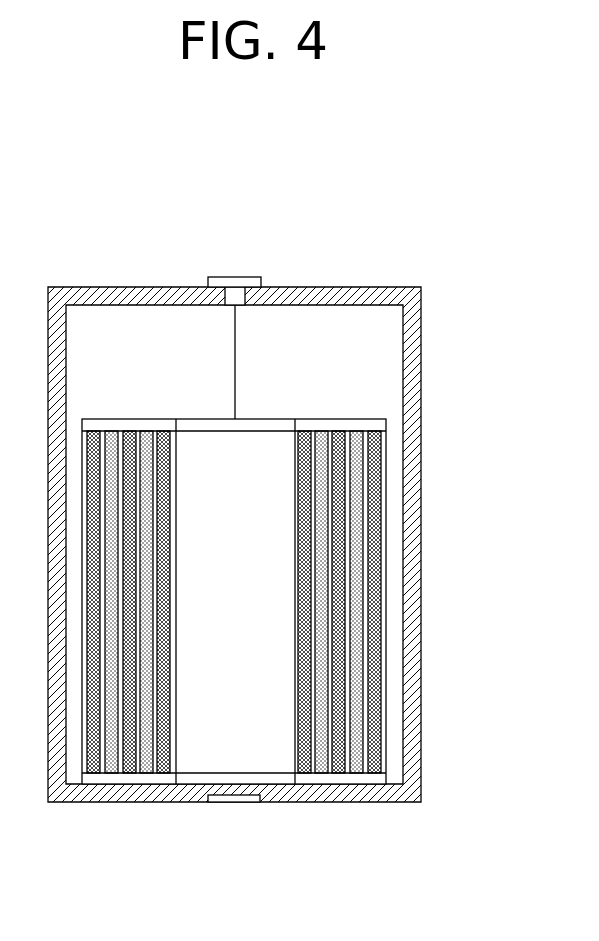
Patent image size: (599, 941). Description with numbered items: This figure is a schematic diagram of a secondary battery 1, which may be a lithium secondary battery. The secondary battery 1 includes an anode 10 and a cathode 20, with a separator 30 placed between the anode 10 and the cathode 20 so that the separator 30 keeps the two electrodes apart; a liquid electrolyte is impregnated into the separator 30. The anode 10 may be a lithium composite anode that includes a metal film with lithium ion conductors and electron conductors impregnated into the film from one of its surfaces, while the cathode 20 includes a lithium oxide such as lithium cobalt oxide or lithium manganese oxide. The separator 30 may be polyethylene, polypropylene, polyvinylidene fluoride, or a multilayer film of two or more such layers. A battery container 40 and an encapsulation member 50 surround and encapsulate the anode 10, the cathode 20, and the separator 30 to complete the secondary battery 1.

The secondary battery 1 is at (401, 206).
The anode 10 is at (377, 515).
The cathode 20 is at (358, 557).
The separator 30 is at (385, 472).
The battery container 40 is at (413, 431).
The encapsulation member 50 is at (233, 291).